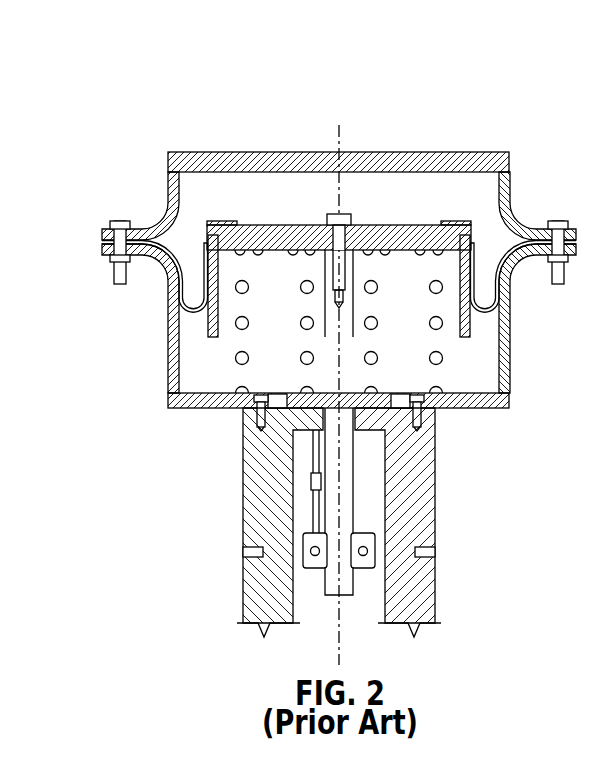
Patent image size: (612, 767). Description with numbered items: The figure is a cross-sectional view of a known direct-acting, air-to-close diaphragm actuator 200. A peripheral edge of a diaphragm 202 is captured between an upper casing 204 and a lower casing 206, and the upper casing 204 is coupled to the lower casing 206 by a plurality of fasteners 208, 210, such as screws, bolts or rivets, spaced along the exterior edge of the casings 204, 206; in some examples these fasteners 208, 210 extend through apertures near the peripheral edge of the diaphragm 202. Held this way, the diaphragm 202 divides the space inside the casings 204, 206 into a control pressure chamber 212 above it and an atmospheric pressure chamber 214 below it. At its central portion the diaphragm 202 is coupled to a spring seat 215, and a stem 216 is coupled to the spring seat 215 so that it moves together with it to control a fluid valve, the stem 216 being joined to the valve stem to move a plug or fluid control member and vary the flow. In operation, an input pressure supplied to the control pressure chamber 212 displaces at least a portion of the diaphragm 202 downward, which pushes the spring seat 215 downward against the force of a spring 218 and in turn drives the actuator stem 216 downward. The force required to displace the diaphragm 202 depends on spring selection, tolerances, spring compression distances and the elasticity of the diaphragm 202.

The diaphragm actuator 200 is at (121, 80).
The diaphragm 202 is at (196, 308).
The upper casing 204 is at (207, 162).
The lower casing 206 is at (188, 408).
The fastener 208 is at (104, 229).
The fastener 210 is at (556, 222).
The control pressure chamber 212 is at (292, 210).
The atmospheric pressure chamber 214 is at (297, 345).
The spring seat 215 is at (423, 224).
The stem 216 is at (343, 500).
The spring 218 is at (443, 358).